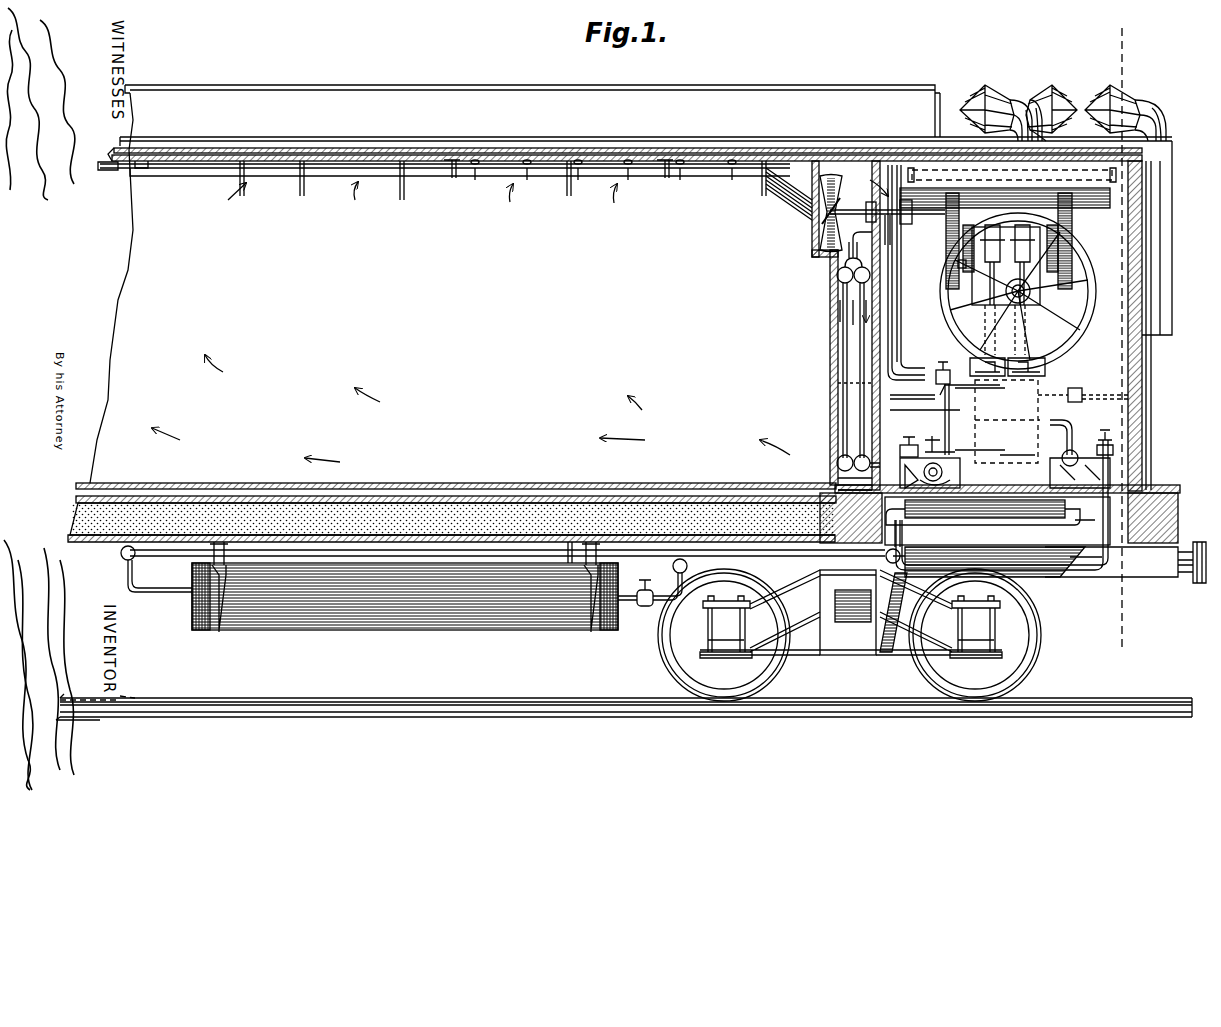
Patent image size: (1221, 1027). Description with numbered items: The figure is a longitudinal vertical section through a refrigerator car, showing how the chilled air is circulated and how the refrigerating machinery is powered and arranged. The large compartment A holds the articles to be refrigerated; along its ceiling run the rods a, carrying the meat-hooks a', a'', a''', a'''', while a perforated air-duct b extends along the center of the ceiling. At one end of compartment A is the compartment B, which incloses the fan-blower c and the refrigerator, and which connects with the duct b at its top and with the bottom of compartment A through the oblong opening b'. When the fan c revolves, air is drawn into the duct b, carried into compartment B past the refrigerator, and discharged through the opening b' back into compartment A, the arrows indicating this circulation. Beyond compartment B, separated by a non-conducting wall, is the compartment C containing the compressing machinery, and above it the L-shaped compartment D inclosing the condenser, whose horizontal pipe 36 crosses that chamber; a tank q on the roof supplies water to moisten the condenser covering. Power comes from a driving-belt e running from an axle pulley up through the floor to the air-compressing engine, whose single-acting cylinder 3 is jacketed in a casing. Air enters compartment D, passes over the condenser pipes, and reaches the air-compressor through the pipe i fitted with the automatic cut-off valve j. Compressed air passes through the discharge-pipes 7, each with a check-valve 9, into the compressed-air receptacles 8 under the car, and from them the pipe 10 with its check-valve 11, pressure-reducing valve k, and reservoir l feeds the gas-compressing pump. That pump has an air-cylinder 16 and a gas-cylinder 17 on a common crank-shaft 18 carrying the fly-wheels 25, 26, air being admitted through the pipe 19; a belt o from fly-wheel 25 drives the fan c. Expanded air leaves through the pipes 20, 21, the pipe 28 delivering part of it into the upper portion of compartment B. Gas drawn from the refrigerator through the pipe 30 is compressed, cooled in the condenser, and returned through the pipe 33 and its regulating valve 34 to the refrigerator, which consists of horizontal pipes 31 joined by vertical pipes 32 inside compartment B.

The single-acting cylinder 3 is at (1121, 336).
The discharge-pipe 7 is at (513, 556).
The compressed-air receptacle 8 is at (405, 587).
The check-valve 9 is at (1150, 104).
The pipe 10 is at (860, 555).
The check-valve 11 is at (1005, 494).
The air-cylinder 16 is at (985, 359).
The gas-cylinder 17 is at (1027, 359).
The crank-shaft 18 is at (1006, 280).
The pipe 19 is at (1073, 424).
The pipe 20 is at (1070, 395).
The pipe 21 is at (1007, 421).
The fly-wheel 25 is at (891, 205).
The fly-wheel 26 is at (1020, 241).
The pipe 28 is at (902, 276).
The gas-supply pipe 30 is at (887, 278).
The horizontal pipe 31 is at (848, 358).
The vertical pipe 32 is at (842, 383).
The pipe 33 is at (998, 473).
The valve 34 is at (909, 439).
The condenser pipe 36 is at (1012, 176).
The refrigerating compartment A is at (593, 322).
The fan and refrigerator compartment B is at (845, 325).
The machinery compartment C is at (868, 241).
The condenser compartment D is at (1005, 187).
The rod a is at (442, 180).
The meat-hook a' is at (266, 181).
The meat-hook a'' is at (396, 184).
The meat-hook a''' is at (592, 184).
The meat-hook a'''' is at (556, 190).
The air-duct b is at (522, 182).
The oblong opening b' is at (843, 470).
The fan-blower c is at (814, 228).
The driving-belt e is at (1020, 291).
The pipe i is at (901, 236).
The automatic cut-off valve j is at (936, 402).
The automatic pressure-reducing valve k is at (1020, 296).
The compressed-air reservoir l is at (997, 521).
The motor m is at (863, 612).
The reservoir n is at (995, 553).
The belt o is at (948, 250).
The tank q is at (631, 284).